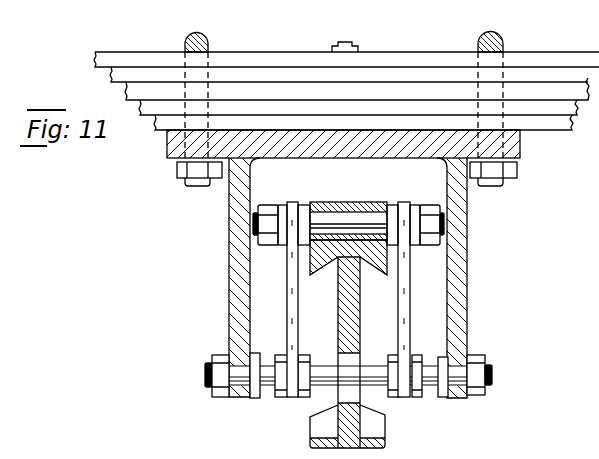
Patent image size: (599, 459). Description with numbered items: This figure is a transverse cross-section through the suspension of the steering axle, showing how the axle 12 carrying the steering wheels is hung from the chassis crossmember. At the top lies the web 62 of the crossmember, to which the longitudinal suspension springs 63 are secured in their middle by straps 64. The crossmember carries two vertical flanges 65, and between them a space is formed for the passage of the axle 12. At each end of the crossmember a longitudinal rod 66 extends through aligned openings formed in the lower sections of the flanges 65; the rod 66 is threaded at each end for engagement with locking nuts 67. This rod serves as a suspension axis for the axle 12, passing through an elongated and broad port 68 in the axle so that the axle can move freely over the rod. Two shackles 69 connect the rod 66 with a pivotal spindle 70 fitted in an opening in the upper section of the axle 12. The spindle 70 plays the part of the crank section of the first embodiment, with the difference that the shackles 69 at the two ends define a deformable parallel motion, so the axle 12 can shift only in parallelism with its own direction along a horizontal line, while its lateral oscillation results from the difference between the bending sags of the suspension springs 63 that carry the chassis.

The axle 12 is at (385, 445).
The web of crossmember 62 is at (353, 152).
The longitudinal suspension springs 63 is at (382, 83).
The straps 64 is at (210, 43).
The vertical flanges 65 is at (231, 280).
The longitudinal rod 66 is at (325, 386).
The locking nuts 67 is at (212, 385).
The elongated and broad port 68 is at (355, 392).
The shackles 69 is at (293, 328).
The pivotal spindle 70 is at (322, 222).